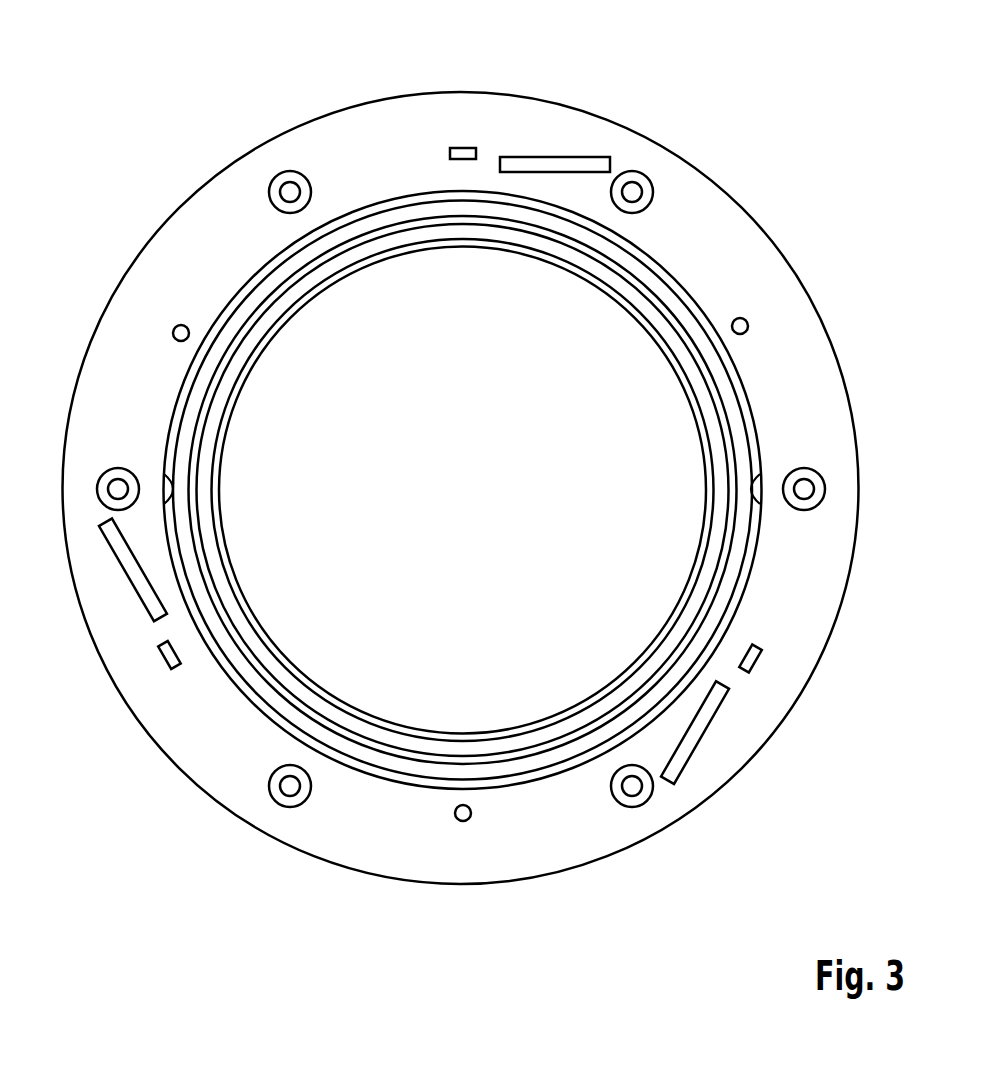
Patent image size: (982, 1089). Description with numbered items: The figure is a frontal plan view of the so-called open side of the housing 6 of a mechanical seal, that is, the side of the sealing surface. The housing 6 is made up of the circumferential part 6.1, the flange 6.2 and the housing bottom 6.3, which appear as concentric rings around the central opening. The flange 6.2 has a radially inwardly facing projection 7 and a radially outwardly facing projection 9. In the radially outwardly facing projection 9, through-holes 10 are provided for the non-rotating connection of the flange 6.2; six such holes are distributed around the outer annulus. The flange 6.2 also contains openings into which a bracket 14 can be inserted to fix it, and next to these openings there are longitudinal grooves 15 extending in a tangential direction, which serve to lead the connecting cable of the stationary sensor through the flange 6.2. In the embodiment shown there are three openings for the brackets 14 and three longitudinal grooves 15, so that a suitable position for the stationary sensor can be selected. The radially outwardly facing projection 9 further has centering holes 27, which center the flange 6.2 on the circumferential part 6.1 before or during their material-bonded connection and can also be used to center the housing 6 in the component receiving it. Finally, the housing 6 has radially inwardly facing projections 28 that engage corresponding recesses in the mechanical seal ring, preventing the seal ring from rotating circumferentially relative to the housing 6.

The housing 6 is at (602, 82).
The circumferential part 6.1 is at (458, 200).
The flange 6.2 is at (707, 192).
The housing bottom 6.3 is at (232, 367).
The radially inwardly facing projection 7 is at (250, 283).
The radially outwardly facing projection 9 is at (432, 106).
The through-holes 10 is at (290, 183).
The bracket 14 is at (465, 146).
The longitudinal grooves 15 is at (553, 157).
The centering holes 27 is at (172, 333).
The radially inwardly facing projections 28 is at (175, 484).